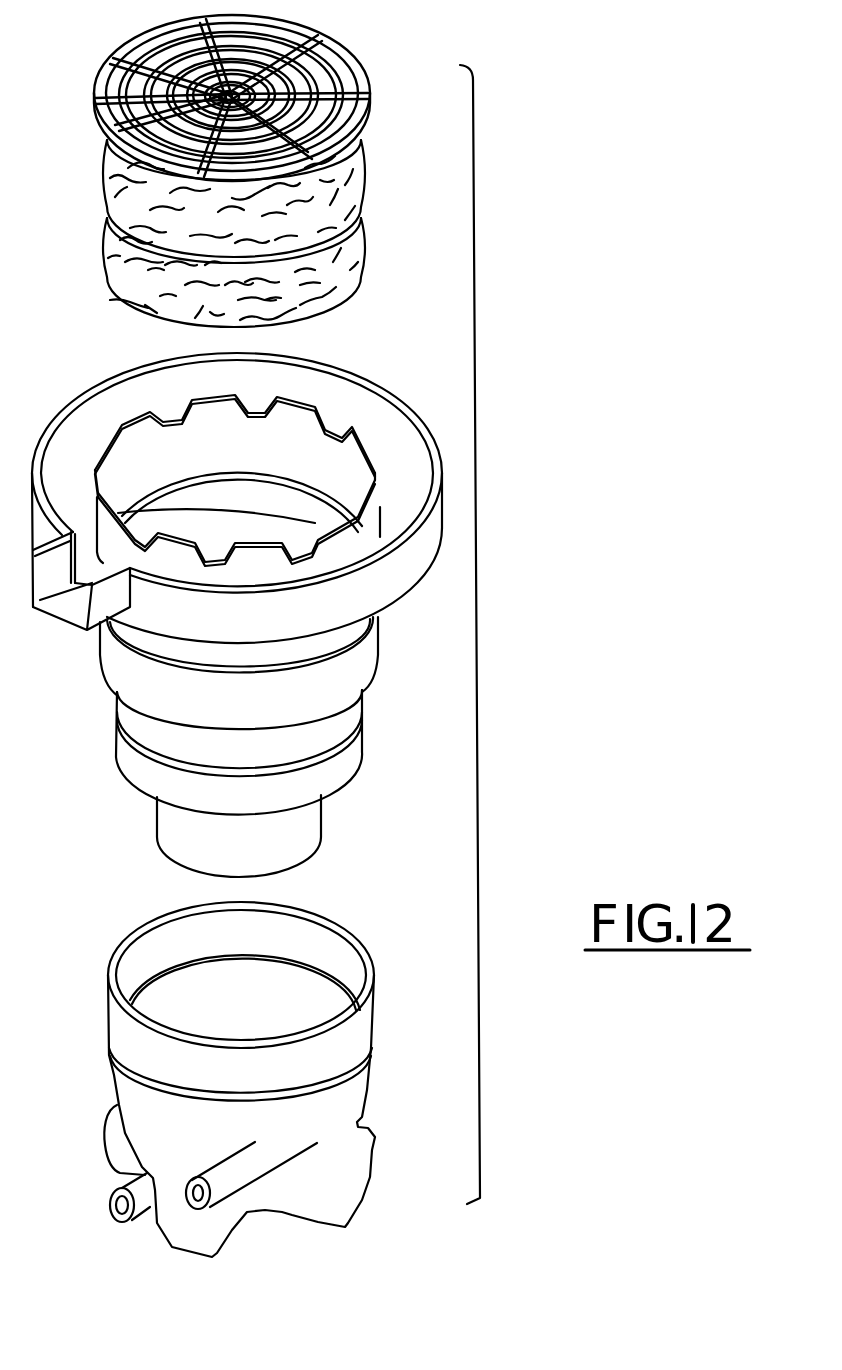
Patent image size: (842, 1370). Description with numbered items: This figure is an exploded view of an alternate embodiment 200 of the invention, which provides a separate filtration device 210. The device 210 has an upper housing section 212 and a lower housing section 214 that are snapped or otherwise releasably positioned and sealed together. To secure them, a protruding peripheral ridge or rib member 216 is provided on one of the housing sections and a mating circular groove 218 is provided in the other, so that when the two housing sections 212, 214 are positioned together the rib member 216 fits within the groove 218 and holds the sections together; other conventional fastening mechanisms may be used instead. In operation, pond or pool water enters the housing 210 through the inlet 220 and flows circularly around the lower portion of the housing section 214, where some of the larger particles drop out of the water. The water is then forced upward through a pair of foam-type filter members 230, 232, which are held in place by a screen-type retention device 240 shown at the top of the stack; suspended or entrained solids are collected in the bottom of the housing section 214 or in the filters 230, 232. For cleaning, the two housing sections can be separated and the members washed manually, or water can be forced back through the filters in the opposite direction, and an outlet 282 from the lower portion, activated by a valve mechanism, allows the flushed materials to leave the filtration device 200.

The alternate embodiment 200 is at (474, 470).
The filtration device 210 is at (85, 834).
The upper housing section 212 is at (120, 665).
The lower housing section 214 is at (110, 1017).
The rib member 216 is at (380, 616).
The groove 218 is at (368, 1045).
The inlet 220 is at (237, 1177).
The filter member 230 is at (367, 262).
The filter member 232 is at (368, 175).
The retention device 240 is at (340, 70).
The outlet 282 is at (125, 1172).